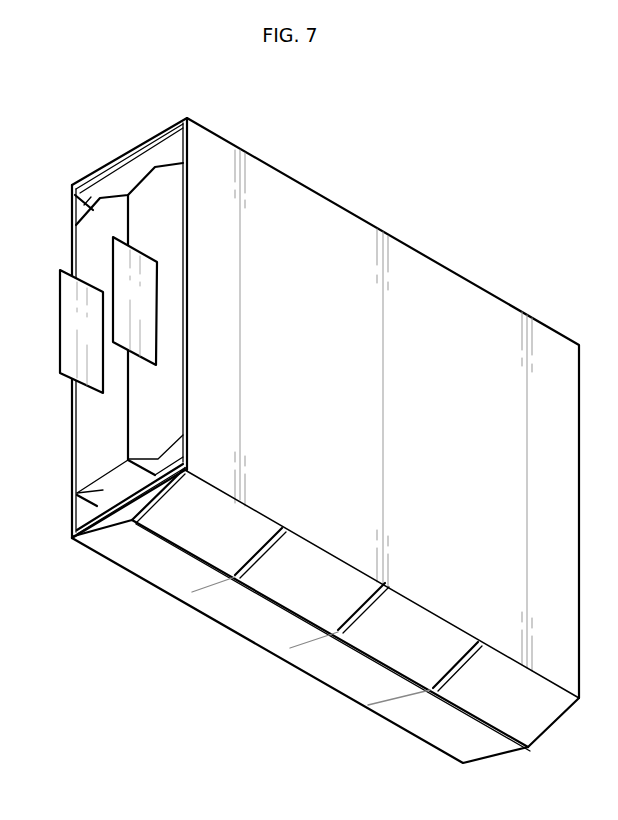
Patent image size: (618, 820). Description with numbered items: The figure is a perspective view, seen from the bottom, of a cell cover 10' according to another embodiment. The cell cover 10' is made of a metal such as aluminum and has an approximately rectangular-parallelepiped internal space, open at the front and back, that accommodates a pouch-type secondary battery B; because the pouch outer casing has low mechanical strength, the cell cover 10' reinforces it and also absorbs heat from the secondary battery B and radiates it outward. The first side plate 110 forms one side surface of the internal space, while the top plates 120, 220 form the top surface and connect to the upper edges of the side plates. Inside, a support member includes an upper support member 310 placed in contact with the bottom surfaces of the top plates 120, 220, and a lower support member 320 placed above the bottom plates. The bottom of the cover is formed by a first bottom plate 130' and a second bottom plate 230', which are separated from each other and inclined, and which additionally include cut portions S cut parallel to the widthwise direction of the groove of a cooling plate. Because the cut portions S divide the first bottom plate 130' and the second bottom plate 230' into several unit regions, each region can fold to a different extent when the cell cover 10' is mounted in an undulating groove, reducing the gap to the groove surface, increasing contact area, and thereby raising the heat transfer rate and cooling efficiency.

The cell cover 10' is at (325, 408).
The first side plate 110 is at (495, 310).
The top plate 120 is at (152, 137).
The top plate 220 is at (105, 170).
The upper support member 310 is at (84, 204).
The secondary battery B is at (137, 442).
The lower support member 320 is at (97, 510).
The first bottom plate 130' is at (360, 616).
The second bottom plate 230' is at (300, 664).
The cut portion S is at (259, 553).